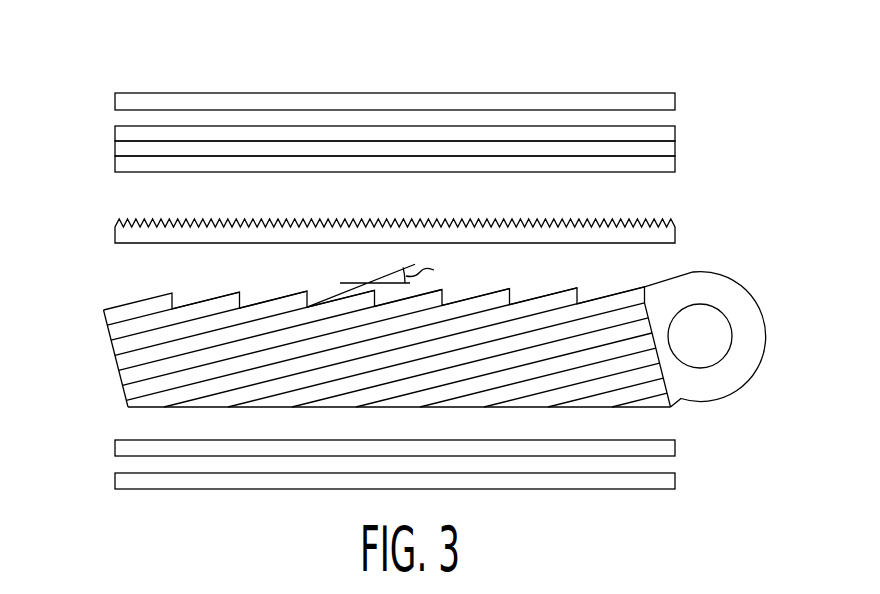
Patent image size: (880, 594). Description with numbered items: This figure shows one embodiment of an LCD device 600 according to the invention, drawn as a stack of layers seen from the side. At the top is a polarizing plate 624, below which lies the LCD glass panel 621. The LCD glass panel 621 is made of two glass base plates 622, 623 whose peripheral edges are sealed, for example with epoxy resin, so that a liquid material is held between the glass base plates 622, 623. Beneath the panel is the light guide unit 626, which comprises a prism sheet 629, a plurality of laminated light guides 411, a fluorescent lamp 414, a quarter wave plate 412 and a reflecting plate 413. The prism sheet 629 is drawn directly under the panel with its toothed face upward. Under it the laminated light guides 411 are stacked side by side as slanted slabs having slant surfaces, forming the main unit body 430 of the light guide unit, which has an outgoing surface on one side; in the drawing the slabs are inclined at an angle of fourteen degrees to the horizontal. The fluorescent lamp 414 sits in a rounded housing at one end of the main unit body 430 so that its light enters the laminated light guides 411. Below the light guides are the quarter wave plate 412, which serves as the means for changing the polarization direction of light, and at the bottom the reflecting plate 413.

The LCD device 600 is at (181, 67).
The polarizing plate 624 is at (675, 94).
The LCD glass panel 621 is at (394, 146).
The glass base plate 622 is at (675, 130).
The glass base plate 623 is at (675, 165).
The prism sheet 629 is at (675, 235).
The light guide unit 626 is at (418, 379).
The laminated light guides 411 is at (174, 293).
The fluorescent lamp 414 is at (717, 307).
The main unit body 430 is at (568, 407).
The quarter wave plate 412 is at (675, 448).
The reflecting plate 413 is at (675, 481).